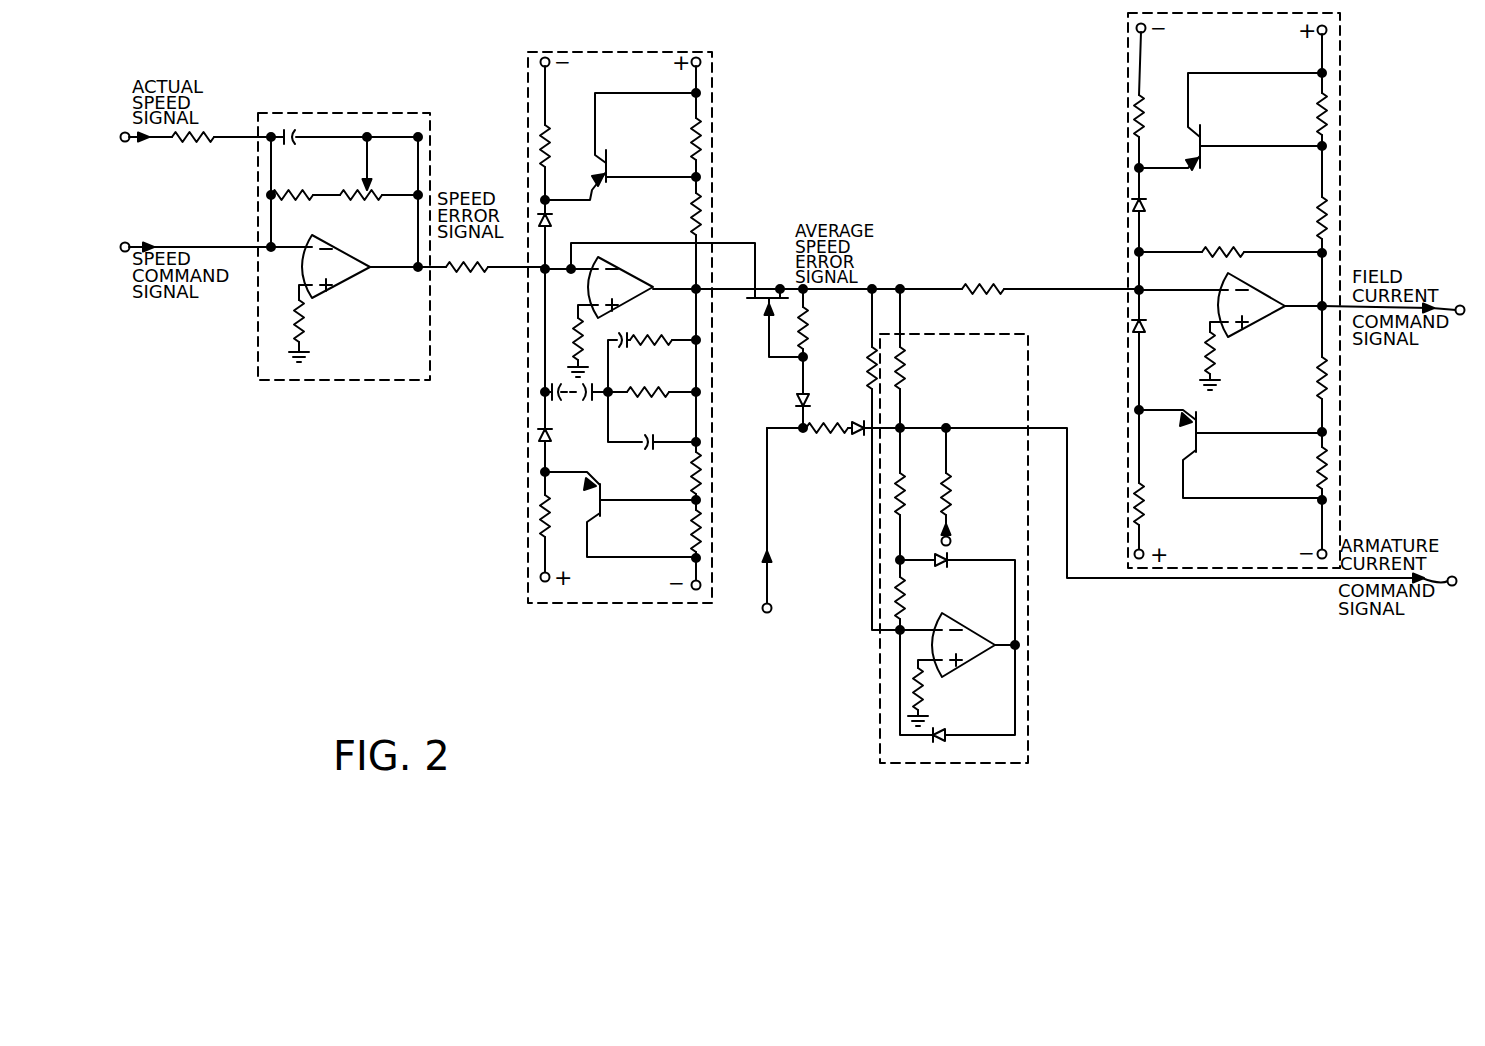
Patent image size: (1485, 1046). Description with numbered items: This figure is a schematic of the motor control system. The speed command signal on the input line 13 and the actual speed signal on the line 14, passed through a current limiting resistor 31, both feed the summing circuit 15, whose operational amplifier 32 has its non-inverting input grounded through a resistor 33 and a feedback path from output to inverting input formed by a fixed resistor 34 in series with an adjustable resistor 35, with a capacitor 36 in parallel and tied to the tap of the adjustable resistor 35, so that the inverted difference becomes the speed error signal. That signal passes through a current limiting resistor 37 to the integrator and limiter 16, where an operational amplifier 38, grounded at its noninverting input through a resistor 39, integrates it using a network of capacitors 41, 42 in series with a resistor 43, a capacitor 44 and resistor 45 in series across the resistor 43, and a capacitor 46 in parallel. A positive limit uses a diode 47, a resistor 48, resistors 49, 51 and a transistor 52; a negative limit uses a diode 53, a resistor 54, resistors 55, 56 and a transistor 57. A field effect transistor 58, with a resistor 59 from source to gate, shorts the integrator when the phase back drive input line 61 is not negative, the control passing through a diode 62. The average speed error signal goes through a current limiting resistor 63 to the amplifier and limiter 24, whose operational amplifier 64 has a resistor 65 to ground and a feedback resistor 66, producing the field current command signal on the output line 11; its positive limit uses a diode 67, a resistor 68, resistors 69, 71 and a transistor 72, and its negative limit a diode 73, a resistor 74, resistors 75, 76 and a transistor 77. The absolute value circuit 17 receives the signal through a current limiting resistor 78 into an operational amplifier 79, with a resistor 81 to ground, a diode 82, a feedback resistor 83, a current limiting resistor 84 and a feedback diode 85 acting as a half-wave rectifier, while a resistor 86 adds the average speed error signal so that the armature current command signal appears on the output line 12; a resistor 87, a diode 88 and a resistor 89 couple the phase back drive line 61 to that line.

The output line 11 is at (1455, 315).
The output line 12 is at (1449, 583).
The input line 13 is at (220, 246).
The line 14 is at (153, 138).
The summing circuit 15 is at (310, 113).
The integrator and limiter 16 is at (610, 52).
The absolute value circuit 17 is at (1002, 338).
The amplifier and limiter 24 is at (1130, 17).
The current limiting resistor 31 is at (210, 133).
The operational amplifier 32 is at (333, 252).
The resistor 33 is at (305, 322).
The fixed resistor 34 is at (300, 192).
The adjustable resistor 35 is at (372, 190).
The capacitor 36 is at (300, 134).
The current limiting resistor 37 is at (472, 267).
The operational amplifier 38 is at (620, 273).
The resistor 39 is at (573, 350).
The capacitor 41 is at (558, 399).
The capacitor 42 is at (589, 399).
The resistor 43 is at (638, 392).
The capacitor 44 is at (631, 328).
The resistor 45 is at (657, 334).
The capacitor 46 is at (658, 438).
The diode 47 is at (552, 433).
The resistor 48 is at (545, 537).
The resistor 49 is at (690, 472).
The resistor 51 is at (687, 522).
The transistor 52 is at (604, 500).
The diode 53 is at (551, 220).
The resistor 54 is at (552, 160).
The resistor 55 is at (692, 210).
The resistor 56 is at (694, 128).
The transistor 57 is at (608, 173).
The field effect transistor 58 is at (760, 303).
The resistor 59 is at (808, 333).
The phase back drive input line 61 is at (768, 566).
The diode 62 is at (798, 395).
The current limiting resistor 63 is at (968, 287).
The operational amplifier 64 is at (1245, 298).
The resistor 65 is at (1222, 356).
The feedback resistor 66 is at (1213, 250).
The diode 67 is at (1147, 320).
The resistor 68 is at (1141, 492).
The resistor 69 is at (1318, 376).
The resistor 71 is at (1314, 470).
The transistor 72 is at (1204, 425).
The diode 73 is at (1147, 200).
The resistor 74 is at (1145, 132).
The resistor 75 is at (1322, 218).
The resistor 76 is at (1322, 124).
The transistor 77 is at (1205, 138).
The current limiting resistor 78 is at (868, 361).
The operational amplifier 79 is at (962, 630).
The resistor 81 is at (924, 687).
The diode 82 is at (947, 565).
The feedback resistor 83 is at (898, 603).
The current limiting resistor 84 is at (913, 494).
The feedback diode 85 is at (934, 730).
The resistor 86 is at (903, 372).
The resistor 87 is at (809, 418).
The diode 88 is at (866, 428).
The resistor 89 is at (951, 497).